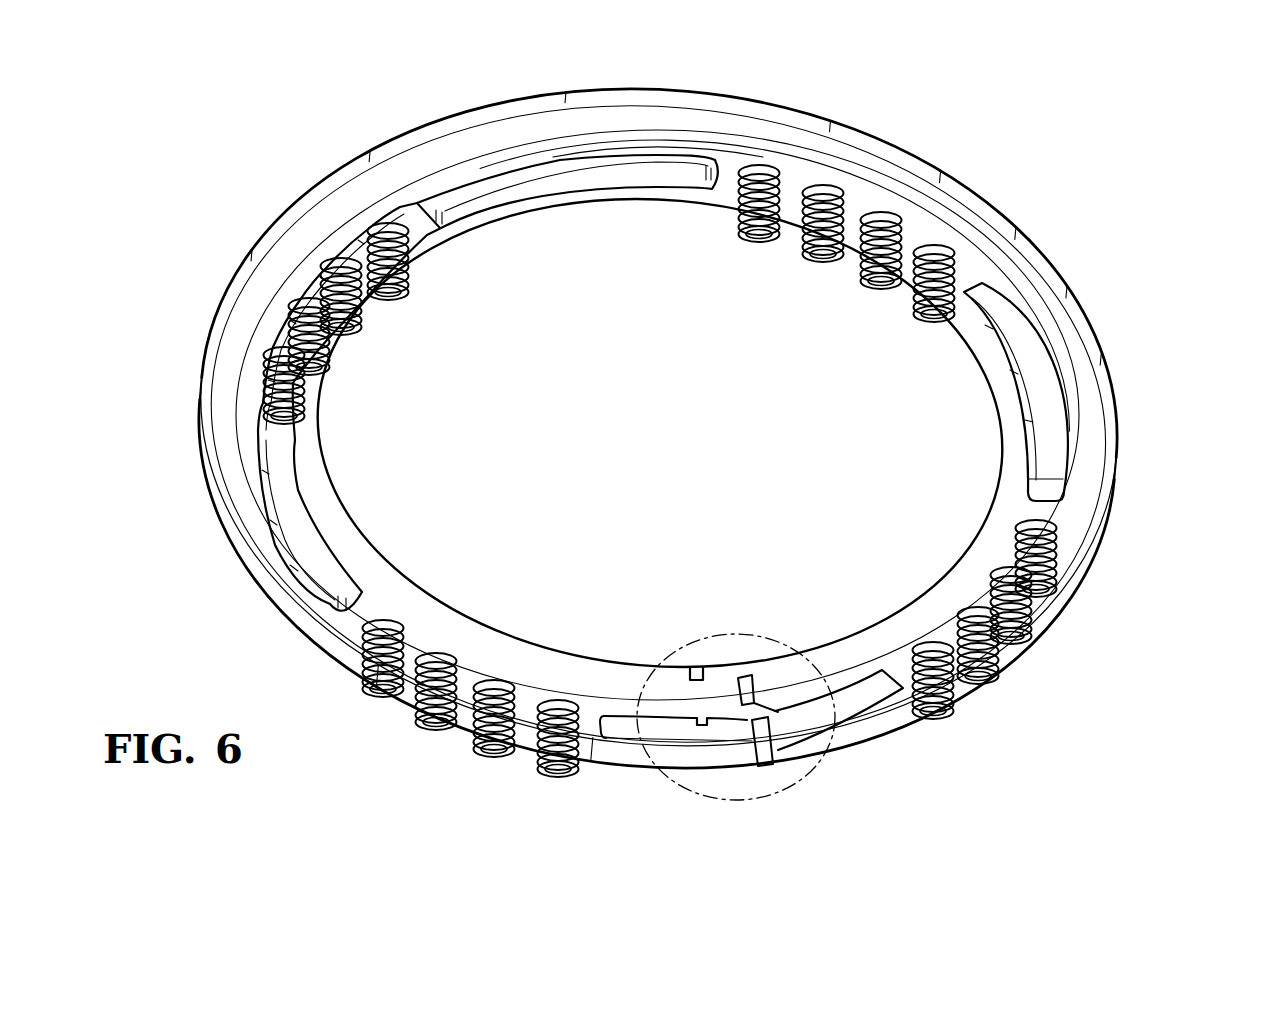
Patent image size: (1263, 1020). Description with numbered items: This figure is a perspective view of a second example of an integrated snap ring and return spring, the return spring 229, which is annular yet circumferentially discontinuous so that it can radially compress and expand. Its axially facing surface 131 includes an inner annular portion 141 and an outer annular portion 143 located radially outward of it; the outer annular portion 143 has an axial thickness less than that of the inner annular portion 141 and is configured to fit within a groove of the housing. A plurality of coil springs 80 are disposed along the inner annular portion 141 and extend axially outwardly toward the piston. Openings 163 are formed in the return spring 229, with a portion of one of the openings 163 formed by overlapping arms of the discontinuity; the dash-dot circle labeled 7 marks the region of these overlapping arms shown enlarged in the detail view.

The return spring 229 is at (1022, 106).
The springs 80 is at (933, 258).
The inner annular portion 141 is at (970, 268).
The outer annular portion 143 is at (1085, 360).
The openings 163 is at (1043, 437).
The axially facing surface 131 is at (540, 692).
The detail circle 7 is at (683, 790).